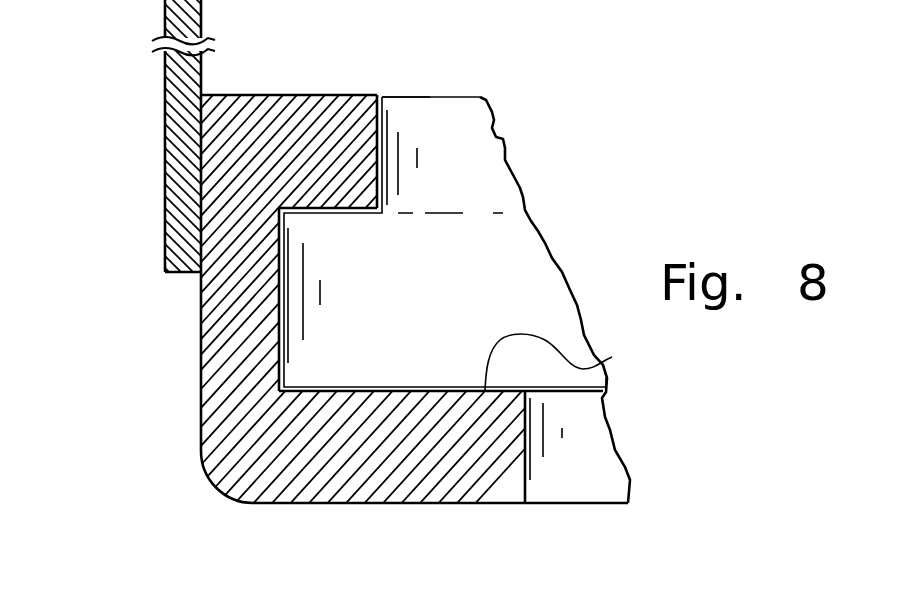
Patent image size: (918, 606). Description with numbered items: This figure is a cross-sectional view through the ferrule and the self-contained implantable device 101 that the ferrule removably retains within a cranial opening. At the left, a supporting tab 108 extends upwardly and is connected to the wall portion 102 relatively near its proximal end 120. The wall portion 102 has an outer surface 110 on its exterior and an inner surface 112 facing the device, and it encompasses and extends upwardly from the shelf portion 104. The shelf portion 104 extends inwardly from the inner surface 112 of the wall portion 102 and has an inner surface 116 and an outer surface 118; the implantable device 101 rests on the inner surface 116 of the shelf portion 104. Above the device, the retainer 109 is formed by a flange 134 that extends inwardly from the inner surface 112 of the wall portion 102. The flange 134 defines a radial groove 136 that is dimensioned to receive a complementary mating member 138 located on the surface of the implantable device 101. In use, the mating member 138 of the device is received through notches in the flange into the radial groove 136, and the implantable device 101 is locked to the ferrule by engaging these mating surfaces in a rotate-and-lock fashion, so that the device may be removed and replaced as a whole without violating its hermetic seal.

The self-contained implantable device 101 is at (469, 302).
The wall portion 102 is at (215, 294).
The shelf portion 104 is at (460, 492).
The supporting tab 108 is at (164, 20).
The retainer 109 is at (334, 62).
The outer surface 110 is at (201, 374).
The inner surface 112 is at (278, 362).
The inner surface 116 is at (570, 362).
The outer surface 118 is at (395, 505).
The proximal end 120 is at (165, 271).
The flange 134 is at (352, 96).
The radial groove 136 is at (279, 322).
The mating member 138 is at (310, 208).